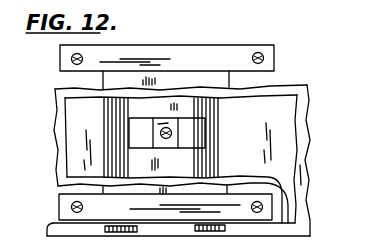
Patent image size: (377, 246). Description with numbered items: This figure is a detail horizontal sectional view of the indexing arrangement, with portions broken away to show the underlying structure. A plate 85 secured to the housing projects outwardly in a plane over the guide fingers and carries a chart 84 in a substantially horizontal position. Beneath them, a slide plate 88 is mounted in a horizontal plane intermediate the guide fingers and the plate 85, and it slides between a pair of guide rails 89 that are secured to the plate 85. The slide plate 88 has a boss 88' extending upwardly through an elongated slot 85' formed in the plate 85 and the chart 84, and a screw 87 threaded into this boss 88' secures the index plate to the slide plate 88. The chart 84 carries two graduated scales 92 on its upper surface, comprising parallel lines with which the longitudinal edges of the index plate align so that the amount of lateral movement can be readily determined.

The chart 84 is at (283, 104).
The plate 85 is at (194, 160).
The elongated slot 85' is at (167, 122).
The screw 87 is at (169, 139).
The slide plate 88 is at (167, 109).
The boss 88' is at (176, 105).
The guide rails 89 is at (262, 49).
The graduated scales 92 is at (222, 116).